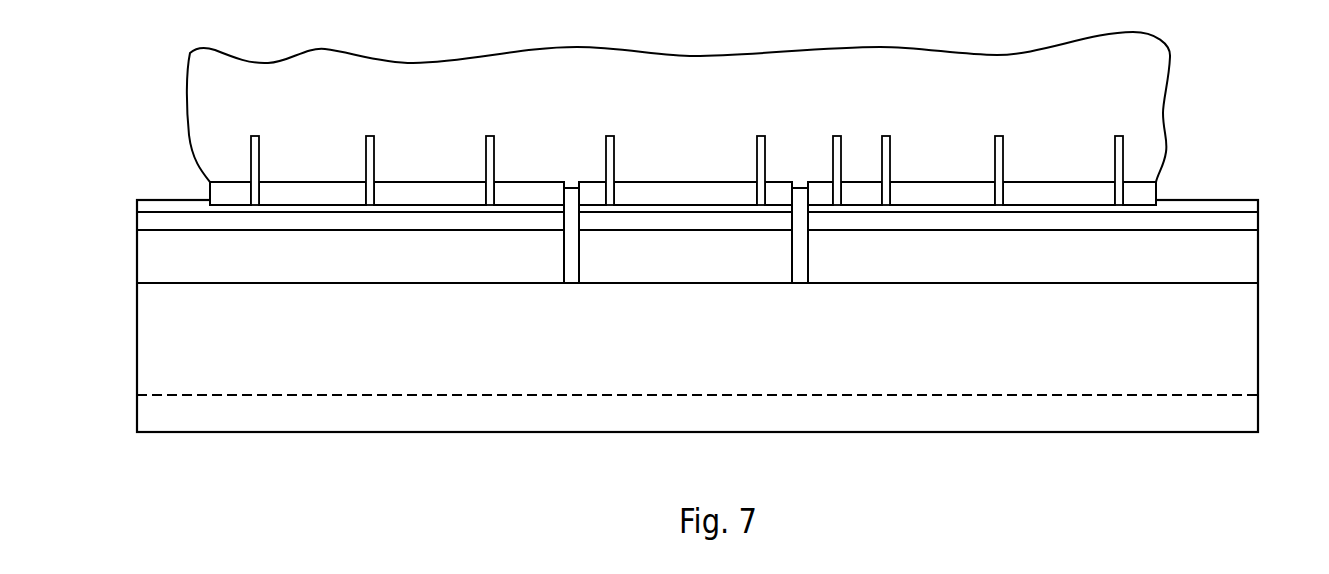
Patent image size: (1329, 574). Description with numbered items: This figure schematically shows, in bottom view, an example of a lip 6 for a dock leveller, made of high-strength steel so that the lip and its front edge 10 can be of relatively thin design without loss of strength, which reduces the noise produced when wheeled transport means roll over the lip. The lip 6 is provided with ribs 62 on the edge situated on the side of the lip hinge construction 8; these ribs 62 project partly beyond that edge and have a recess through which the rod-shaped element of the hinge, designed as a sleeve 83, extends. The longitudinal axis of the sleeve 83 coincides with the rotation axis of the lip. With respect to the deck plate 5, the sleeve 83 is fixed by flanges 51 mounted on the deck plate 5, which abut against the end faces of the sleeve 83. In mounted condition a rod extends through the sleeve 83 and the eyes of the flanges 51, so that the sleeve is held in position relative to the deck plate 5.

The deck plate 5 is at (663, 134).
The lip 6 is at (1238, 338).
The lip hinge construction 8 is at (572, 195).
The front edge 10 is at (1007, 415).
The flanges 51 is at (757, 147).
The ribs 62 is at (994, 353).
The sleeve 83 is at (313, 197).